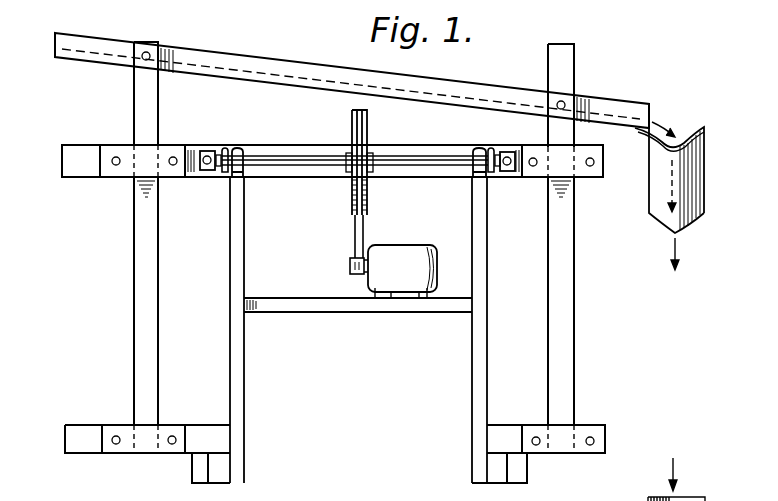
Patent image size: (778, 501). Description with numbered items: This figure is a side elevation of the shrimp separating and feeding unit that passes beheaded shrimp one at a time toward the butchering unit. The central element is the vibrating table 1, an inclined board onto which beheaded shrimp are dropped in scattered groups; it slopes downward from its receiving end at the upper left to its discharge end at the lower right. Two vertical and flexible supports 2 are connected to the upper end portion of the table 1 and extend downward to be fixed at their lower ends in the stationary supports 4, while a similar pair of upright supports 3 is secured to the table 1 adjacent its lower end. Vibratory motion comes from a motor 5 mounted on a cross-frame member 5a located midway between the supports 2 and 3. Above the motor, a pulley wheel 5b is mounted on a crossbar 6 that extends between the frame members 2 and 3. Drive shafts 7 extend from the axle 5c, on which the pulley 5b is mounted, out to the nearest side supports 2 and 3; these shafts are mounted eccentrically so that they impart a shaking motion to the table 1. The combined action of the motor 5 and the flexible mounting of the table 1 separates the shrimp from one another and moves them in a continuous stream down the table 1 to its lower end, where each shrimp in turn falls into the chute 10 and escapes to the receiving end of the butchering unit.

The vibrating table 1 is at (214, 50).
The vertical flexible supports 2 is at (131, 253).
The upright supports 3 is at (576, 250).
The stationary supports 4 is at (76, 440).
The motor 5 is at (412, 252).
The cross-frame member 5a is at (418, 308).
The pulley wheel 5b is at (387, 133).
The axle 5c is at (266, 157).
The crossbar 6 is at (62, 170).
The drive shafts 7 is at (226, 150).
The chute 10 is at (693, 187).